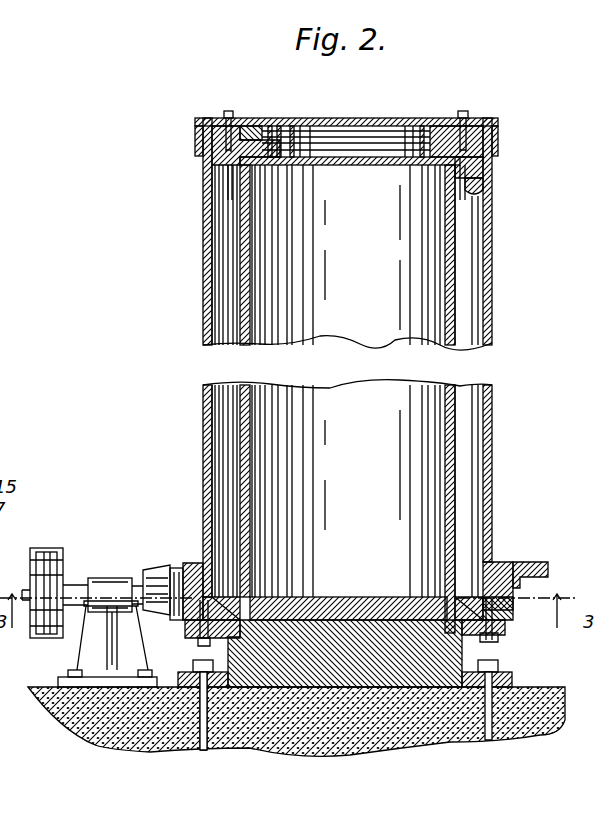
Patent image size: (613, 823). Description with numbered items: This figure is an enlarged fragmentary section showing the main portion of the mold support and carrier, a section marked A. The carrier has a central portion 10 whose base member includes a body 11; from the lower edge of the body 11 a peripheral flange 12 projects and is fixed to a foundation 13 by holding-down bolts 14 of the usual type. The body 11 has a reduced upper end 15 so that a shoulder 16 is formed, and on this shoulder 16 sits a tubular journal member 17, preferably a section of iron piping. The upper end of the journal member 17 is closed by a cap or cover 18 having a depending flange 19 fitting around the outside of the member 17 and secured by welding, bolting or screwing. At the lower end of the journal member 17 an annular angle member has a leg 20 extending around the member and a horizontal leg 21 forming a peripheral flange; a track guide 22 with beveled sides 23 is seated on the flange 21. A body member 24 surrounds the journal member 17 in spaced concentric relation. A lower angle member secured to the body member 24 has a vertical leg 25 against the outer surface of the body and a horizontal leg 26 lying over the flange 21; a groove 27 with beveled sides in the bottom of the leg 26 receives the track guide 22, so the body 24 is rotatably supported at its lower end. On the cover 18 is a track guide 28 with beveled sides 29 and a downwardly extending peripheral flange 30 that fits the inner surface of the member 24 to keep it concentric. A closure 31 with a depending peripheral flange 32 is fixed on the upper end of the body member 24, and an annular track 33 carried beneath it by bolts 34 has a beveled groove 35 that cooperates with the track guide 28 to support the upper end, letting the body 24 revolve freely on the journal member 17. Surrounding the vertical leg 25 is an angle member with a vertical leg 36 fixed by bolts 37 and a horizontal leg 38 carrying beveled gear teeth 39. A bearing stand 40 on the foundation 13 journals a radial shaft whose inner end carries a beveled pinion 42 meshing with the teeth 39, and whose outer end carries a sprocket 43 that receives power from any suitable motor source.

The central portion 10 is at (500, 467).
The body 11 is at (448, 654).
The peripheral flange 12 is at (513, 677).
The foundation 13 is at (540, 722).
The holding-down bolts 14 is at (205, 750).
The reduced upper end 15 is at (352, 600).
The shoulder 16 is at (233, 640).
The tubular journal member 17 is at (448, 532).
The cap or cover 18 is at (386, 166).
The depending flange 19 is at (236, 182).
The leg 20 is at (456, 600).
The horizontal leg 21 is at (506, 630).
The track guide 22 is at (494, 620).
The beveled sides 23 is at (500, 612).
The body member 24 is at (493, 396).
The vertical leg 25 is at (504, 566).
The horizontal leg 26 is at (186, 624).
The groove 27 is at (242, 597).
The track guide 28 is at (478, 140).
The beveled sides 29 is at (466, 128).
The peripheral flange 30 is at (480, 192).
The closure 31 is at (381, 118).
The depending peripheral flange 32 is at (490, 156).
The track 33 is at (265, 130).
The bolts 34 is at (228, 120).
The groove 35 is at (250, 132).
The vertical leg 36 is at (195, 565).
The bolts 37 is at (176, 568).
The horizontal leg 38 is at (160, 565).
The beveled gear teeth 39 is at (512, 600).
The bearing stand 40 is at (86, 656).
The beveled pinion 42 is at (140, 590).
The sprocket 43 is at (50, 555).
The section line A is at (501, 304).